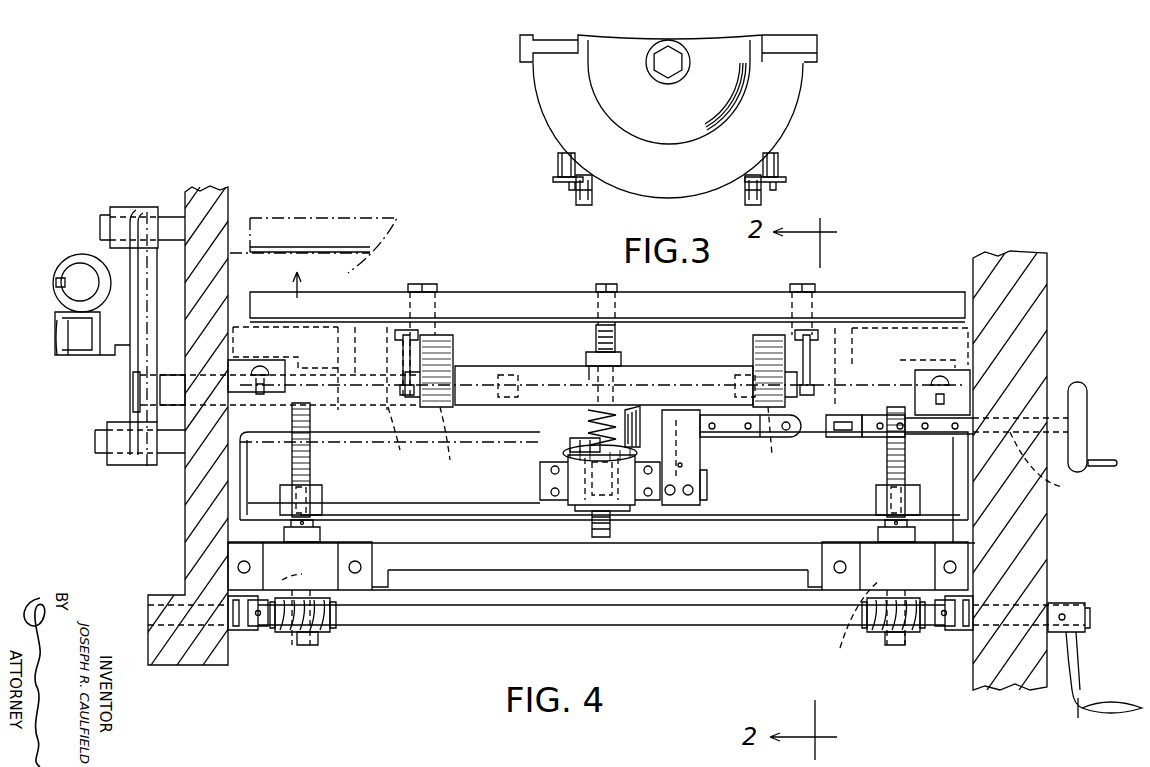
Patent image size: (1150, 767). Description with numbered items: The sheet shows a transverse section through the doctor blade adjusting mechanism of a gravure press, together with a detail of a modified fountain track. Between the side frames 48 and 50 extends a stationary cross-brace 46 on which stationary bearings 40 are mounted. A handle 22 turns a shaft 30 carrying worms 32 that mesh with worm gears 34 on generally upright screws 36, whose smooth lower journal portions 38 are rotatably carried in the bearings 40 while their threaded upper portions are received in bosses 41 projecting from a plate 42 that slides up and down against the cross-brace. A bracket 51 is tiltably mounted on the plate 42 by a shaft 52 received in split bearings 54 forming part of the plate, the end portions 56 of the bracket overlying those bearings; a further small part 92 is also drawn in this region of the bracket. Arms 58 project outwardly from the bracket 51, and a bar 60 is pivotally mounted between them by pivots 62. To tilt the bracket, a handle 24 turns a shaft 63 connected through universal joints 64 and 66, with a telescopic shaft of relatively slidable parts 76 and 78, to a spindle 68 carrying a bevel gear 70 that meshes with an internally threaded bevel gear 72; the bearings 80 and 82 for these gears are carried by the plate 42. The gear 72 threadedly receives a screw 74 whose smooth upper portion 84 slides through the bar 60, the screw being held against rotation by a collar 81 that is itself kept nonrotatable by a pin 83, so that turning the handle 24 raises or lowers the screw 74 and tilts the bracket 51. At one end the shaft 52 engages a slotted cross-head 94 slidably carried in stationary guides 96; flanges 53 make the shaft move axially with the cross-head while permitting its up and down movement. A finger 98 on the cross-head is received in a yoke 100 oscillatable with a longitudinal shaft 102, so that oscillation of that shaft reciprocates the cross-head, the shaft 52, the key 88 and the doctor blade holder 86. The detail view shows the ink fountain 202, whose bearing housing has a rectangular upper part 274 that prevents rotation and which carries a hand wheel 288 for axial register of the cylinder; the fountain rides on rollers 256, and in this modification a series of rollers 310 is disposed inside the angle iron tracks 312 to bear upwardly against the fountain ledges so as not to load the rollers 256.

In FIG. 4, the handle 22 is at (1128, 690).
In FIG. 4, the handle 24 is at (1088, 428).
In FIG. 4, the shaft 30 is at (690, 625).
In FIG. 4, the worms 32 is at (330, 640).
In FIG. 4, the worm gears 34 is at (300, 645).
In FIG. 4, the screws 36 is at (312, 476).
In FIG. 4, the lower journal portions 38 is at (583, 614).
In FIG. 4, the bearings 40 is at (332, 548).
In FIG. 4, the bosses 41 is at (322, 496).
In FIG. 4, the plate 42 is at (492, 478).
In FIG. 4, the stationary part 46 is at (512, 568).
In FIG. 4, the side frame 48 is at (205, 195).
In FIG. 4, the side frame 50 is at (1048, 328).
In FIG. 4, the bracket 51 is at (530, 320).
In FIG. 4, the shaft 52 is at (401, 439).
In FIG. 4, the flanges 53 is at (168, 375).
In FIG. 4, the split bearings 54 is at (285, 386).
In FIG. 4, the end portions 56 is at (248, 320).
In FIG. 4, the arms 58 is at (455, 352).
In FIG. 4, the bar 60 is at (648, 368).
In FIG. 4, the pivots 62 is at (614, 442).
In FIG. 4, the shaft 63 is at (1043, 465).
In FIG. 4, the universal joint 64 is at (922, 440).
In FIG. 4, the universal joint 66 is at (740, 440).
In FIG. 4, the spindle 68 is at (700, 468).
In FIG. 4, the bevel gear 70 is at (640, 410).
In FIG. 4, the bevel gear 72 is at (570, 450).
In FIG. 4, the screw 74 is at (610, 530).
In FIG. 4, the slidable part 76 is at (806, 440).
In FIG. 4, the slidable part 78 is at (850, 440).
In FIG. 4, the bearing 80 is at (588, 420).
In FIG. 4, the collar 81 is at (618, 352).
In FIG. 4, the bearing 82 is at (560, 432).
In FIG. 4, the pin 83 is at (588, 358).
In FIG. 4, the upper portion 84 is at (612, 385).
In FIG. 4, the doctor blade holder 86 is at (700, 302).
In FIG. 4, the key 88 is at (385, 300).
In FIG. 4, the bracket 92 is at (395, 370).
In FIG. 4, the cross-head 94 is at (138, 385).
In FIG. 4, the stationary guides 96 is at (108, 218).
In FIG. 4, the finger 98 is at (70, 358).
In FIG. 4, the yoke 100 is at (56, 328).
In FIG. 4, the shaft 102 is at (76, 278).
In FIG. 3, the fountain 202 is at (800, 98).
In FIG. 3, the rollers 256 is at (558, 155).
In FIG. 3, the upper part 274 is at (818, 56).
In FIG. 3, the hand wheel 288 is at (745, 86).
In FIG. 3, the rollers 310 is at (586, 202).
In FIG. 3, the angle iron tracks 312 is at (556, 180).